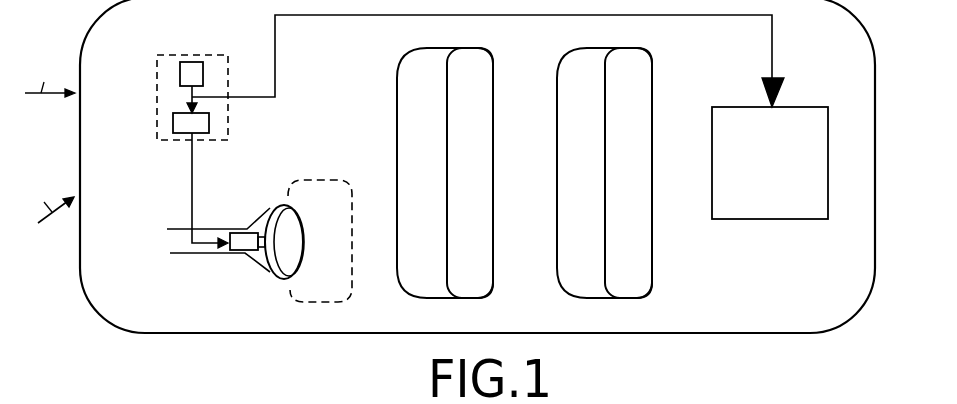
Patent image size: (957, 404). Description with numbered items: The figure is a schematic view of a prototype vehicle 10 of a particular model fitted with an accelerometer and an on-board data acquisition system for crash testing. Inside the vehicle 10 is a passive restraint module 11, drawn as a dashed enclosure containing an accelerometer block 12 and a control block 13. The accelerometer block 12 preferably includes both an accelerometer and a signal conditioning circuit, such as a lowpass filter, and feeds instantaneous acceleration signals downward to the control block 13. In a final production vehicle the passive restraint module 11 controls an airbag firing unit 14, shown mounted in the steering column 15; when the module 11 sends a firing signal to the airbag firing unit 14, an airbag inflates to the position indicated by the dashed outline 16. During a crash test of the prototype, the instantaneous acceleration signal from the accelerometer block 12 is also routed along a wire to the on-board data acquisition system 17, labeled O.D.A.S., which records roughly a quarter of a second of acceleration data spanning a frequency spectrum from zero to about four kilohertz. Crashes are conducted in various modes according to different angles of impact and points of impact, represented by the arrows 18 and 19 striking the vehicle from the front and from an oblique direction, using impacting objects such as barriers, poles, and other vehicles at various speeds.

The vehicle 10 is at (277, 337).
The passive restraint module 11 is at (157, 60).
The accelerometer block 12 is at (197, 61).
The control block 13 is at (173, 113).
The airbag firing unit 14 is at (248, 253).
The steering column 15 is at (273, 203).
The inflated airbag position 16 is at (325, 180).
The on-board data acquisition system 17 is at (795, 220).
The impact direction arrow 18 is at (50, 73).
The impact direction arrow 19 is at (54, 197).